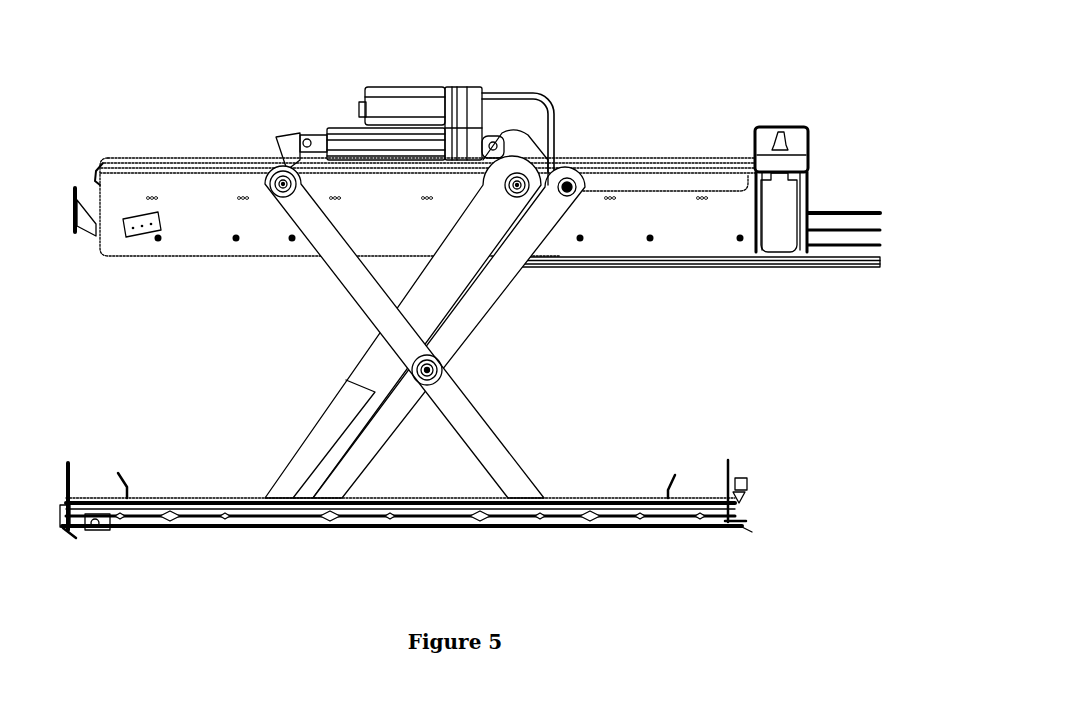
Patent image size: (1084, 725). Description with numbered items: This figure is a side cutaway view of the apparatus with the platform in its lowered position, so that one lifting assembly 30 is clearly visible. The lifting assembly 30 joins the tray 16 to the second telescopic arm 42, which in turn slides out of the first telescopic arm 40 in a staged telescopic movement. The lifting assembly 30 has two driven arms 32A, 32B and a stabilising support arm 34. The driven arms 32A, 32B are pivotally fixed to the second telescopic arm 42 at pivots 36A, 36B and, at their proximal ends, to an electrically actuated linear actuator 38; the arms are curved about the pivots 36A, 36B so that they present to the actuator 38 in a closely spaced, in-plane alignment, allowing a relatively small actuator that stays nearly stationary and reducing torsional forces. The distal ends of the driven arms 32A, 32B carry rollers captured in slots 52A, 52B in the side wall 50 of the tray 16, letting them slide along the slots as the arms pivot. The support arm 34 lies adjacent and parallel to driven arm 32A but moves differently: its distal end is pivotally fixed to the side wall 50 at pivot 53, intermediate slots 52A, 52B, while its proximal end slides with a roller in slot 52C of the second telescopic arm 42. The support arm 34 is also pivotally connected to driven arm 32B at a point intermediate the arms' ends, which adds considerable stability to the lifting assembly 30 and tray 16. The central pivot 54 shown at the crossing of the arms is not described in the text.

The tray 16 is at (455, 533).
The lifting assembly 30 is at (515, 252).
The driven arm 32A is at (324, 406).
The driven arm 32B is at (351, 294).
The support arm 34 is at (488, 309).
The pivot 36A is at (527, 167).
The pivot 36B is at (274, 166).
The linear actuator 38 is at (382, 71).
The first telescopic arm 40 is at (853, 202).
The second telescopic arm 42 is at (162, 179).
The side wall 50 is at (481, 530).
The slot 52A is at (160, 530).
The slot 52B is at (602, 526).
The slot 52C is at (683, 172).
The pivot 53 is at (338, 533).
The central pivot 54 is at (449, 374).